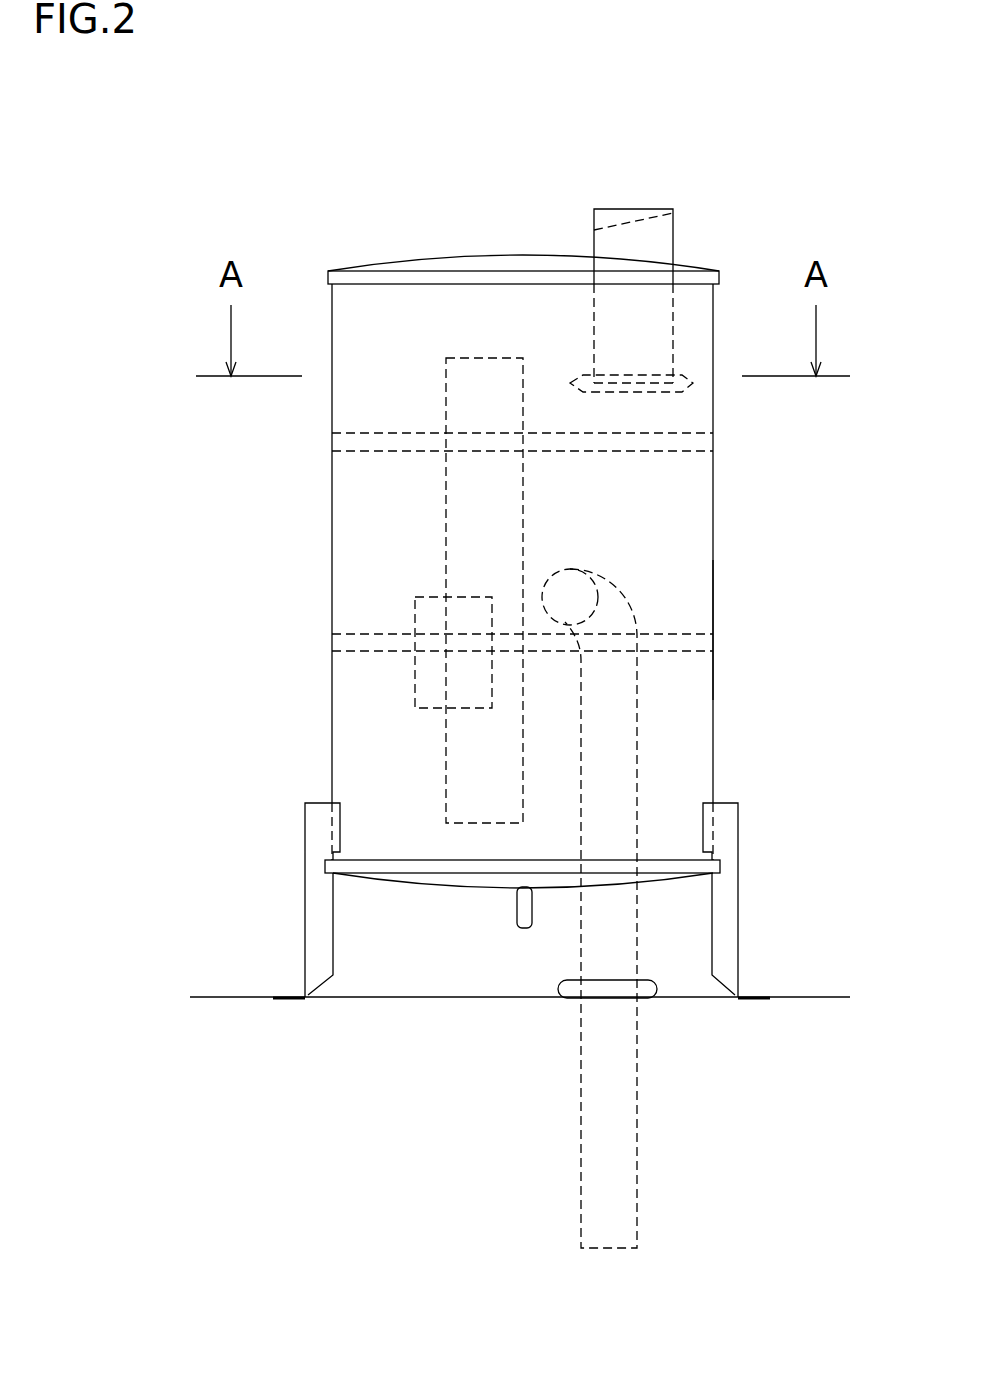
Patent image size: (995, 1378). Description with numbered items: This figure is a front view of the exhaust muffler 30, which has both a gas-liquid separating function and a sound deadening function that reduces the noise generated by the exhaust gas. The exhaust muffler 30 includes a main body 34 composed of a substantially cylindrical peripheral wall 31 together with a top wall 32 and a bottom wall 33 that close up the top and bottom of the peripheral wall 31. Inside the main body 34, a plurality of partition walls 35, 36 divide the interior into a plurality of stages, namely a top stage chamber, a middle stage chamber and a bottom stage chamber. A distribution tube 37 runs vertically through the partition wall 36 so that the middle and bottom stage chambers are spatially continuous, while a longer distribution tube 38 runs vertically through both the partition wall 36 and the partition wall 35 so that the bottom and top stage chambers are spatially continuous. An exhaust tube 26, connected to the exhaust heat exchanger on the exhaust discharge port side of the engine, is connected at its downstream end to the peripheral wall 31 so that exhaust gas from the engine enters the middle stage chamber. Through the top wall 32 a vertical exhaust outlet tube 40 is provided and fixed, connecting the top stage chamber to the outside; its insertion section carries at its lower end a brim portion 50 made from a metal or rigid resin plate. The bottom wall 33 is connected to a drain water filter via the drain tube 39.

The exhaust muffler 30 is at (569, 187).
The peripheral wall 31 is at (713, 513).
The top wall 32 is at (524, 255).
The bottom wall 33 is at (425, 886).
The main body 34 is at (730, 635).
The partition wall 35 is at (358, 443).
The partition wall 36 is at (358, 644).
The distribution tube 37 is at (425, 677).
The distribution tube 38 is at (465, 520).
The drain tube 39 is at (525, 930).
The exhaust outlet tube 40 is at (675, 236).
The brim portion 50 is at (693, 383).
The exhaust tube 26 is at (618, 937).